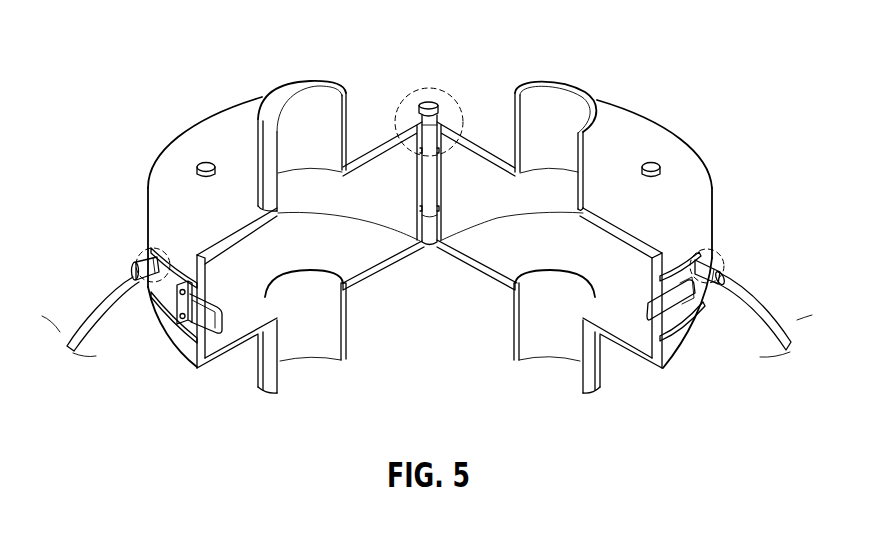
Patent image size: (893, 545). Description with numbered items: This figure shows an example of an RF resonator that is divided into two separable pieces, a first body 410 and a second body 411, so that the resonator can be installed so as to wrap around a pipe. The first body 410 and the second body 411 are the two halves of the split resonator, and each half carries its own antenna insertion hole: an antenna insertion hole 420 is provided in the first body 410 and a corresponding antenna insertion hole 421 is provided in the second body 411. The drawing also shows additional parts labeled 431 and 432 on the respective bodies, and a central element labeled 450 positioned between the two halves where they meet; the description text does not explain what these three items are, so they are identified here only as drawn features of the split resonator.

The first body 410 is at (213, 137).
The second body 411 is at (653, 130).
The antenna insertion hole 420 is at (143, 252).
The antenna insertion hole 421 is at (715, 253).
The first fastening bracket 431 is at (180, 307).
The second fastening bracket 432 is at (668, 307).
The hinge pin 450 is at (423, 92).